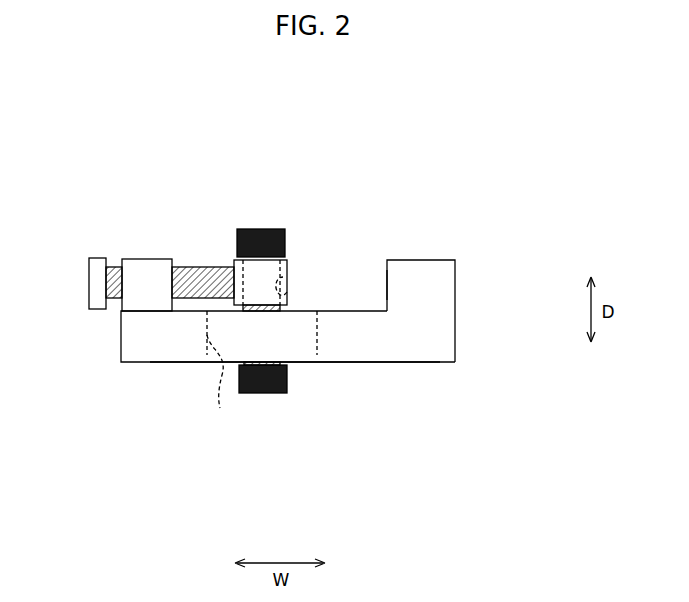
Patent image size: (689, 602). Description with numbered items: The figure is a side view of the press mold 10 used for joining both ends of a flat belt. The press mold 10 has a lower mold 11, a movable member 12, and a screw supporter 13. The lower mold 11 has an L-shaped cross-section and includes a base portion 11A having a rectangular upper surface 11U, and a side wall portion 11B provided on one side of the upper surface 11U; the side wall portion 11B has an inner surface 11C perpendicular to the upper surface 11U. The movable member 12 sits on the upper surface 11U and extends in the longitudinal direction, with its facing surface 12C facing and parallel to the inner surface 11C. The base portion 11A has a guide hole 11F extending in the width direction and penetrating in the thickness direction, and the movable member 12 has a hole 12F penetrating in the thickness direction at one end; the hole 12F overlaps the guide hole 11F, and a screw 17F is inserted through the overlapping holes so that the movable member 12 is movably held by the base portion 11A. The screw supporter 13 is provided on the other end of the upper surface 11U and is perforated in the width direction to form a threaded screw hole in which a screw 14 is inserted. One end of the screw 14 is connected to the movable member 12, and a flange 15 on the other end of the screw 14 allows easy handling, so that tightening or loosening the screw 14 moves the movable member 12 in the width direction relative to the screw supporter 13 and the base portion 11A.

The press mold 10 is at (377, 180).
The lower mold 11 is at (342, 365).
The base portion 11A is at (358, 336).
The side wall portion 11B is at (423, 285).
The inner surface 11C is at (386, 280).
The guide hole 11F is at (221, 370).
The upper surface 11U is at (323, 311).
The movable member 12 is at (257, 285).
The facing surface 12C is at (288, 273).
The hole 12F is at (287, 292).
The screw supporter 13 is at (148, 276).
The screw 14 is at (190, 300).
The flange 15 is at (89, 281).
The screw 17F is at (260, 229).